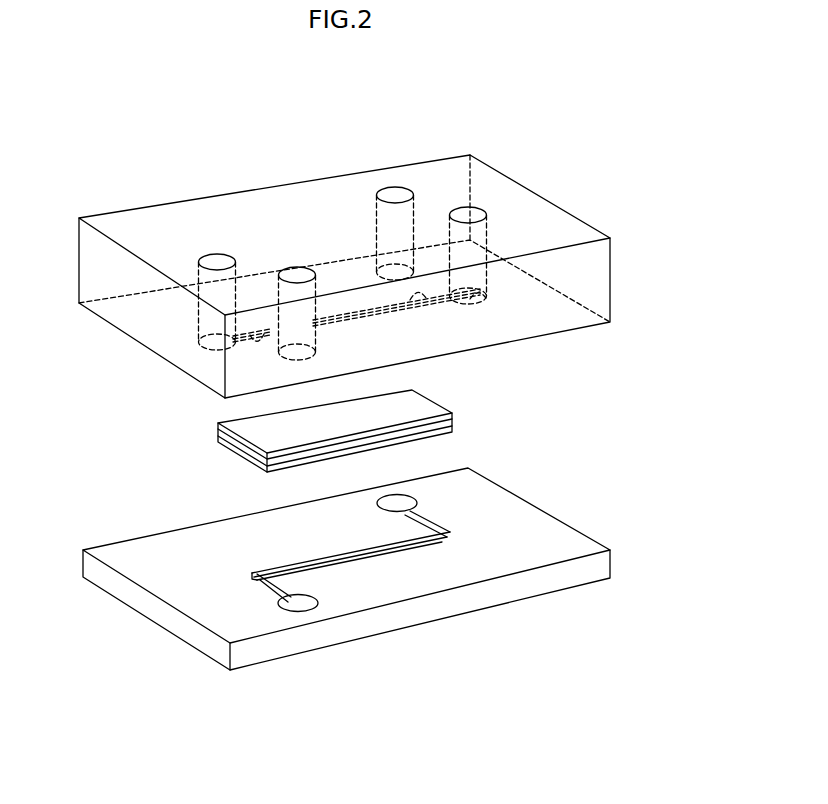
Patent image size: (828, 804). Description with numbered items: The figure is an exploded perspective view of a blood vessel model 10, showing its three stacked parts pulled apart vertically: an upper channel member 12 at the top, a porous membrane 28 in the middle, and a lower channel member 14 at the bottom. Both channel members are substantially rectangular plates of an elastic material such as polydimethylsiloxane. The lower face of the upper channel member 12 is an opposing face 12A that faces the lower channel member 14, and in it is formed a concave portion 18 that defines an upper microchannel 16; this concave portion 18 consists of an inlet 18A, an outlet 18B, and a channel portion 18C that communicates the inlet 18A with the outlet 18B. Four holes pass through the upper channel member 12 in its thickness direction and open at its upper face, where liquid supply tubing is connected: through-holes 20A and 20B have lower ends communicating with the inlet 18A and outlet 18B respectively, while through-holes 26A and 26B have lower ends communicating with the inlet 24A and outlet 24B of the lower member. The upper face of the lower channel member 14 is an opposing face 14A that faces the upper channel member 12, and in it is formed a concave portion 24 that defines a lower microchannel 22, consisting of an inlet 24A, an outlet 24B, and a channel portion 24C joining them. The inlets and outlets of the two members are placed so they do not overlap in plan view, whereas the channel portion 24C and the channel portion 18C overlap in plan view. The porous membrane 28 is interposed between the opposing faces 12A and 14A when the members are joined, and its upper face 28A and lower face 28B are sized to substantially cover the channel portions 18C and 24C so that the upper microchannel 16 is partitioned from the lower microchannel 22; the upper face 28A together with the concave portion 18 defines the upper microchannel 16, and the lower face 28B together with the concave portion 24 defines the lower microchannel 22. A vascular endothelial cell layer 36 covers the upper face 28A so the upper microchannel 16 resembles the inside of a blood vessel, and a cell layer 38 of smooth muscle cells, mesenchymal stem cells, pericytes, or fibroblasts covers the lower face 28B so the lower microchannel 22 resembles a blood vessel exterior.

The blood vessel model 10 is at (583, 121).
The upper channel member 12 is at (600, 273).
The opposing face 12A is at (576, 330).
The lower channel member 14 is at (558, 523).
The opposing face 14A is at (443, 570).
The upper microchannel 16 is at (425, 293).
The concave portion 18 is at (353, 306).
The inlet 18A is at (202, 342).
The outlet 18B is at (483, 298).
The channel portion 18C is at (253, 338).
The through-hole 20A is at (207, 315).
The through-hole 20B is at (482, 236).
The lower microchannel 22 is at (353, 560).
The concave portion 24 is at (380, 550).
The inlet 24A is at (300, 612).
The outlet 24B is at (390, 490).
The channel portion 24C is at (260, 571).
The through-hole 26A is at (313, 358).
The through-hole 26B is at (400, 214).
The porous membrane 28 is at (243, 450).
The upper face 28A is at (440, 407).
The lower face 28B is at (253, 470).
The vascular endothelial cell layer 36 is at (333, 423).
The cell layer 38 is at (310, 467).